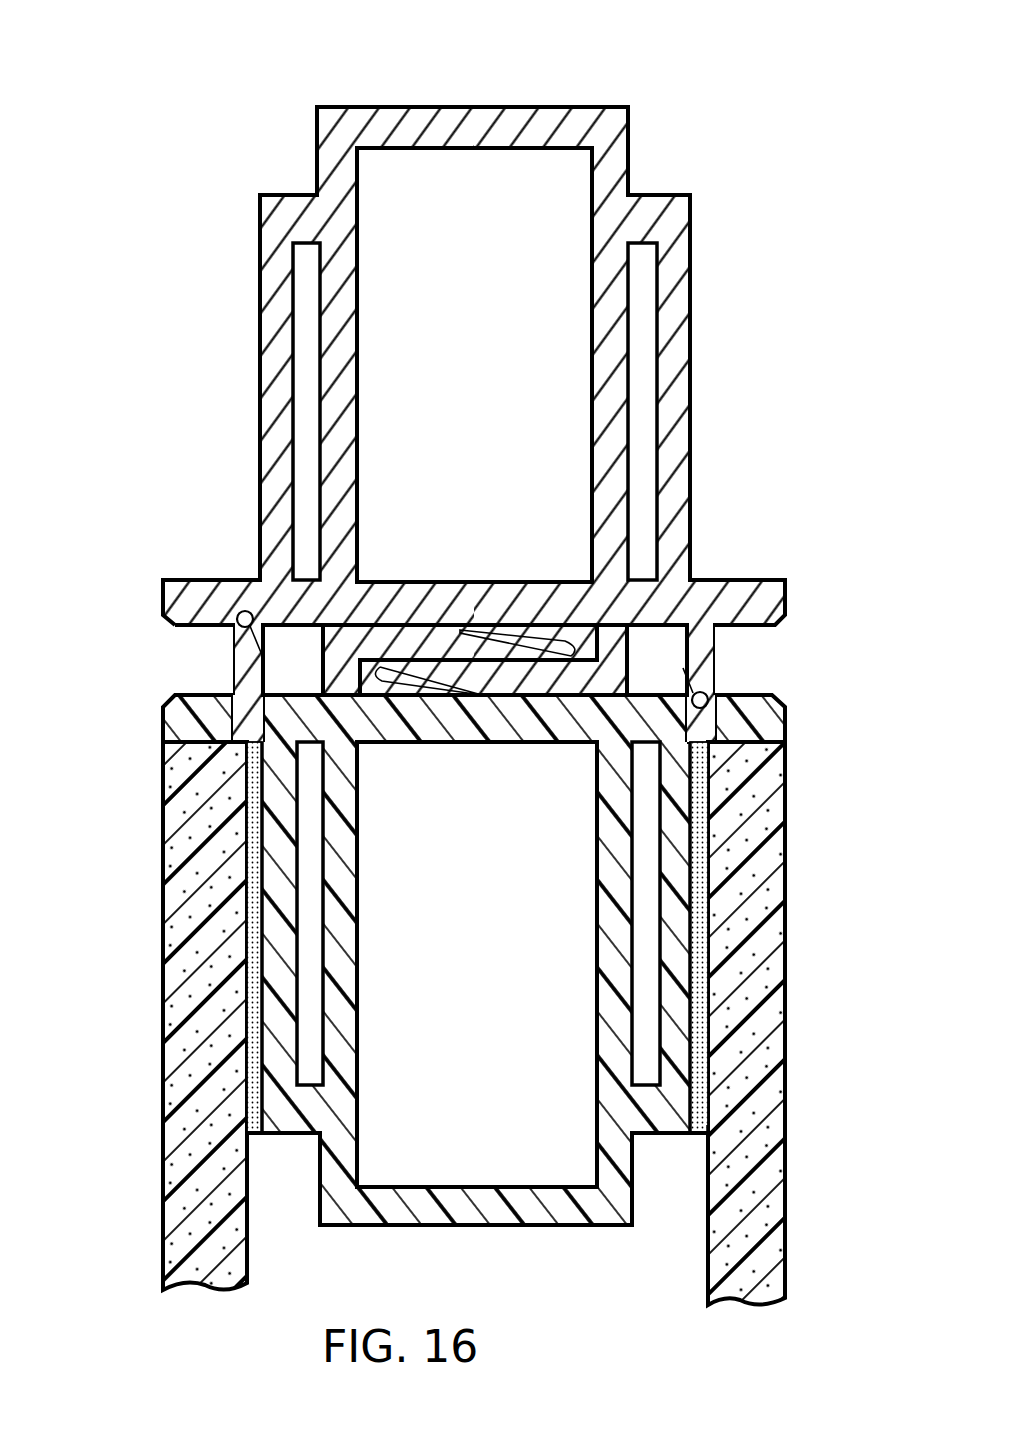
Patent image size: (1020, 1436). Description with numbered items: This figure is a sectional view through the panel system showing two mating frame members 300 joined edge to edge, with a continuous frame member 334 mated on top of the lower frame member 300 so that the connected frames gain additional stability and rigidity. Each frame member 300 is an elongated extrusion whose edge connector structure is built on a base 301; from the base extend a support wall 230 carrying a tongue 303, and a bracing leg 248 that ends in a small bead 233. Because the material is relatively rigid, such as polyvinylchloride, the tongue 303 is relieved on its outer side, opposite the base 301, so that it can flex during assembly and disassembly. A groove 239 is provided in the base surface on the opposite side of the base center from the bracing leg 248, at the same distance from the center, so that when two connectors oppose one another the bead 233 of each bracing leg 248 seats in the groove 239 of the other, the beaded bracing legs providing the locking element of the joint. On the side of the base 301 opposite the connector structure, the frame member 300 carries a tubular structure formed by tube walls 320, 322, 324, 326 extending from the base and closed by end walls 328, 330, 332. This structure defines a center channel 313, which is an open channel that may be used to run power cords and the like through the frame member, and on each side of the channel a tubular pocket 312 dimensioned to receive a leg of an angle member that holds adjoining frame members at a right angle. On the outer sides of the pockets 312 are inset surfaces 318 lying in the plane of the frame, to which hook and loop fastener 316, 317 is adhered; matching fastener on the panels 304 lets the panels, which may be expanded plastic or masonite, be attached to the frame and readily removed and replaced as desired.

The frame member 300 is at (479, 674).
The continuous frame member 334 is at (738, 305).
The base 301 is at (763, 697).
The tongue 303 is at (493, 648).
The support wall 230 is at (323, 643).
The bead 233 is at (238, 612).
The groove 239 is at (243, 628).
The bracing leg 248 is at (230, 667).
The panel 304 is at (165, 1078).
The tubular pocket 312 is at (313, 827).
The center channel 313 is at (483, 1017).
The hook and loop fastener 316 is at (695, 1137).
The hook and loop fastener 317 is at (703, 1140).
The inset surface 318 is at (247, 958).
The tube wall 320 is at (300, 878).
The tube wall 322 is at (358, 896).
The tube wall 324 is at (600, 957).
The tube wall 326 is at (660, 832).
The end wall 328 is at (287, 1137).
The end wall 330 is at (381, 1228).
The end wall 332 is at (645, 1148).